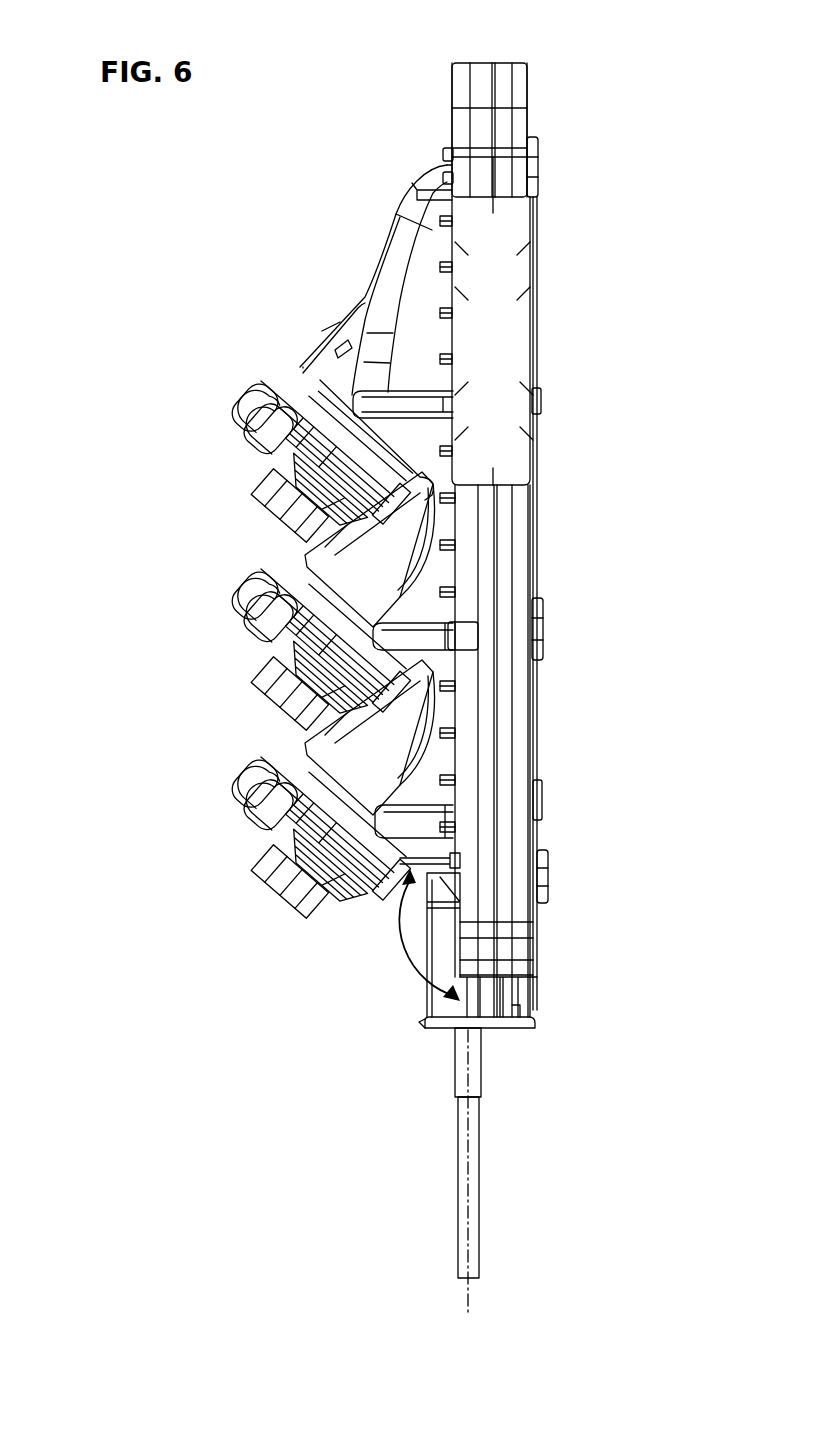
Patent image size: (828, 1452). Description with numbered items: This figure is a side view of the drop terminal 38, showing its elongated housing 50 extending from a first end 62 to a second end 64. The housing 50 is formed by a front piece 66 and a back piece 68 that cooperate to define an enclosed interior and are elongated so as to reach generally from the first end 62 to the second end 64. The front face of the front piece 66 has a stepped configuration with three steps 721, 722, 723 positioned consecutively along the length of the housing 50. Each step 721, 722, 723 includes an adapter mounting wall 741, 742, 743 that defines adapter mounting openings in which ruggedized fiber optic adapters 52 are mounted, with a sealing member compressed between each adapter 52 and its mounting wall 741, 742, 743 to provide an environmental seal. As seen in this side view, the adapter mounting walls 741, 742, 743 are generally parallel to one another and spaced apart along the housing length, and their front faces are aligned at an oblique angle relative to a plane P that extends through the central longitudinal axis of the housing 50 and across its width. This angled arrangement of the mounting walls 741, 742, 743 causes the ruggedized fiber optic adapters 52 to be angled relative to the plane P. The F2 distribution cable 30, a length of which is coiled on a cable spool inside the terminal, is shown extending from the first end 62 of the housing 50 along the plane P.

The F2 distribution cable 30 is at (480, 1125).
The drop terminal 38 is at (362, 149).
The housing 50 is at (556, 190).
The ruggedized fiber optic adapter 52 is at (290, 906).
The first end 62 is at (506, 1030).
The second end 64 is at (505, 65).
The front piece 66 is at (452, 84).
The back piece 68 is at (528, 84).
The first step 721 is at (303, 743).
The second step 722 is at (303, 555).
The third step 723 is at (308, 366).
The first adapter mounting wall 741 is at (300, 773).
The second adapter mounting wall 742 is at (300, 585).
The third adapter mounting wall 743 is at (303, 392).
The plane P is at (468, 1185).